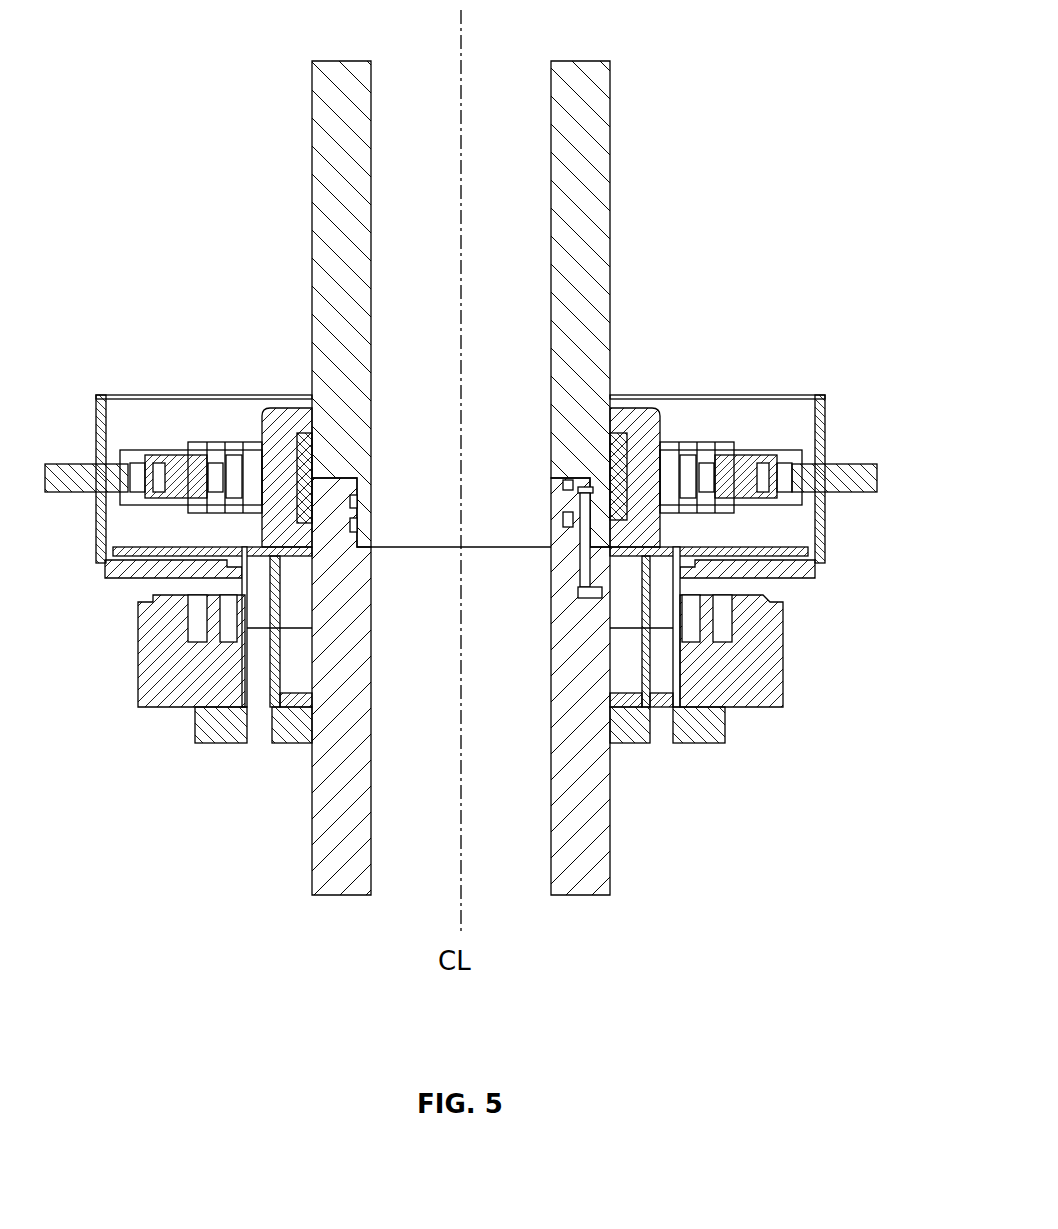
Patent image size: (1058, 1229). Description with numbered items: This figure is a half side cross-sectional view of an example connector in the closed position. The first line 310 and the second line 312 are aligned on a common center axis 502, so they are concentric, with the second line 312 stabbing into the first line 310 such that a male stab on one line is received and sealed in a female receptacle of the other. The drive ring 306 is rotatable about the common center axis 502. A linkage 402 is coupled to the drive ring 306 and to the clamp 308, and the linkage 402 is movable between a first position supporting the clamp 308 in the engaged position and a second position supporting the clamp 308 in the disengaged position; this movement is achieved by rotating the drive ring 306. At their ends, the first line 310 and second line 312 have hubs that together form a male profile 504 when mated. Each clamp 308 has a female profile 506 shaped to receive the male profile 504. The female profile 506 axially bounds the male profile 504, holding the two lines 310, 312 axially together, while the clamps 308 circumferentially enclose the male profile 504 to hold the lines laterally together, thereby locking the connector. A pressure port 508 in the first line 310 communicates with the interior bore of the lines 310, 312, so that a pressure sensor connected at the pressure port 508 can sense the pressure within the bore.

The common center axis 502 is at (461, 37).
The second line 312 is at (595, 98).
The first line 310 is at (596, 828).
The linkage 402 is at (160, 389).
The drive ring 306 is at (865, 478).
The clamp 308 is at (267, 522).
The male profile 504 is at (618, 445).
The female profile 506 is at (627, 515).
The pressure port 508 is at (605, 592).